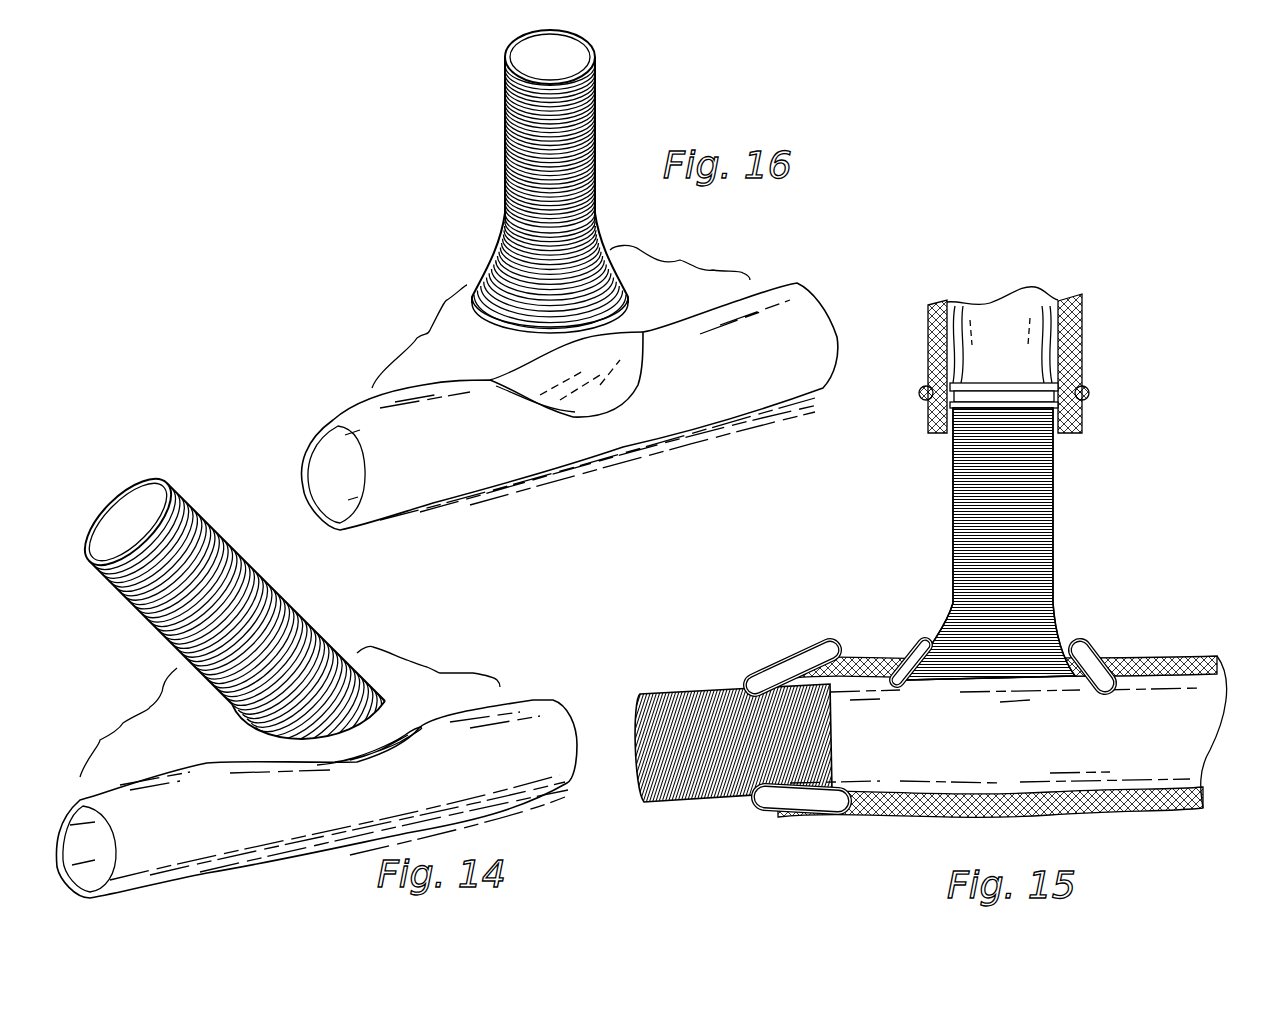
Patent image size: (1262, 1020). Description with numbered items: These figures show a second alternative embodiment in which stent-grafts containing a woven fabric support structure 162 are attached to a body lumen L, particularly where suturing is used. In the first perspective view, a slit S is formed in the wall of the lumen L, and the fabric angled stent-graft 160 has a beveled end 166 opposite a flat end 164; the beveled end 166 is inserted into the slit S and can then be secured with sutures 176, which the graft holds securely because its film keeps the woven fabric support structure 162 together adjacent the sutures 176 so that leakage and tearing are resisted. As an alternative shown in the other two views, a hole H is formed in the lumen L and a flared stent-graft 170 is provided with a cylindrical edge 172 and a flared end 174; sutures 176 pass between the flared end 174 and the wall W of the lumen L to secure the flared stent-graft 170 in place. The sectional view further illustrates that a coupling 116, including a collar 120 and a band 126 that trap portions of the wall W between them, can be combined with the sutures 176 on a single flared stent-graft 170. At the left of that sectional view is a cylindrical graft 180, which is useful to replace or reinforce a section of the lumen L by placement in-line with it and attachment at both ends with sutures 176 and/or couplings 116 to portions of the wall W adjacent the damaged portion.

In FIG. 16, the flared stent-graft 170 is at (440, 158).
In FIG. 15, the flared stent-graft 170 is at (1044, 491).
In FIG. 14, the fabric angled stent-graft 160 is at (243, 607).
In FIG. 14, the woven fabric support structure 162 is at (140, 620).
In FIG. 14, the flat end 164 is at (130, 503).
In FIG. 14, the beveled end 166 is at (293, 737).
In FIG. 15, the cylindrical edge 172 is at (963, 380).
In FIG. 15, the flared end 174 is at (1003, 687).
In FIG. 15, the sutures 176 is at (773, 657).
In FIG. 15, the cylindrical graft 180 is at (665, 662).
In FIG. 15, the collar 120 is at (980, 380).
In FIG. 15, the band 126 is at (920, 393).
In FIG. 15, the coupling 116 is at (1100, 393).
In FIG. 16, the hole H is at (535, 390).
In FIG. 16, the lumen L is at (715, 400).
In FIG. 14, the lumen L is at (520, 797).
In FIG. 15, the lumen L is at (1095, 307).
In FIG. 14, the slit S is at (401, 730).
In FIG. 15, the wall W is at (930, 344).